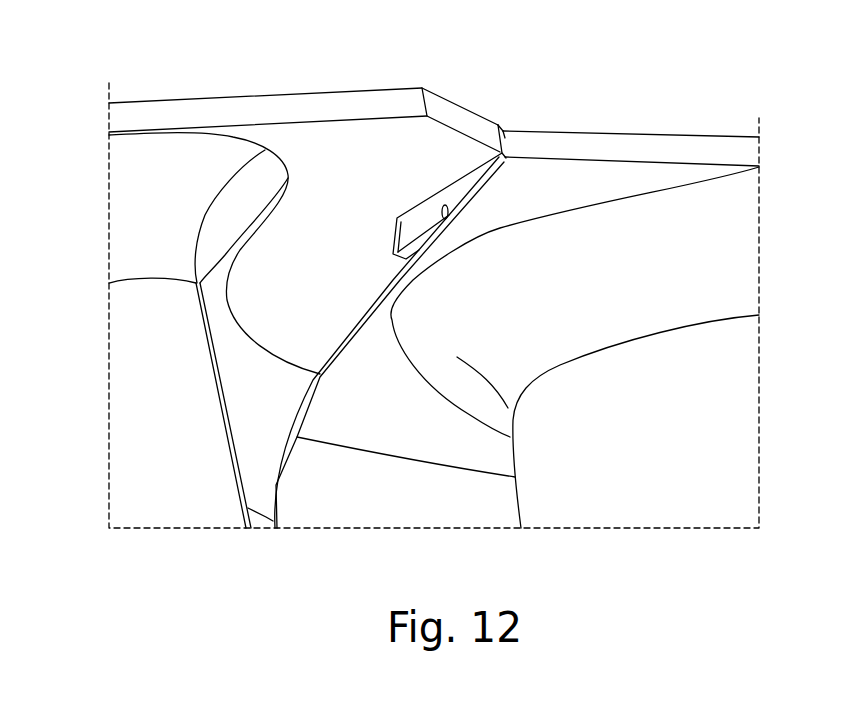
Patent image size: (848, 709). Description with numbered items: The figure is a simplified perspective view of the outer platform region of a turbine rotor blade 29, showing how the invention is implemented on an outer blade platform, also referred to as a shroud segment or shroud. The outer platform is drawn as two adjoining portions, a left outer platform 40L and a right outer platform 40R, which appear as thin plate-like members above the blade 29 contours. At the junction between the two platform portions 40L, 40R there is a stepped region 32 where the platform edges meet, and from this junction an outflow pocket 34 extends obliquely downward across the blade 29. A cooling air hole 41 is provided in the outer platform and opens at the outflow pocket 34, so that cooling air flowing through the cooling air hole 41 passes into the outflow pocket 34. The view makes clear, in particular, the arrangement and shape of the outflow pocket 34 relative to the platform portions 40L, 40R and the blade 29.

The turbine rotor blade 29 is at (132, 374).
The gap 32 is at (497, 131).
The outflow pocket 34 is at (428, 212).
The outer platform 40L is at (307, 110).
The outer platform 40R is at (641, 148).
The cooling air hole 41 is at (448, 213).